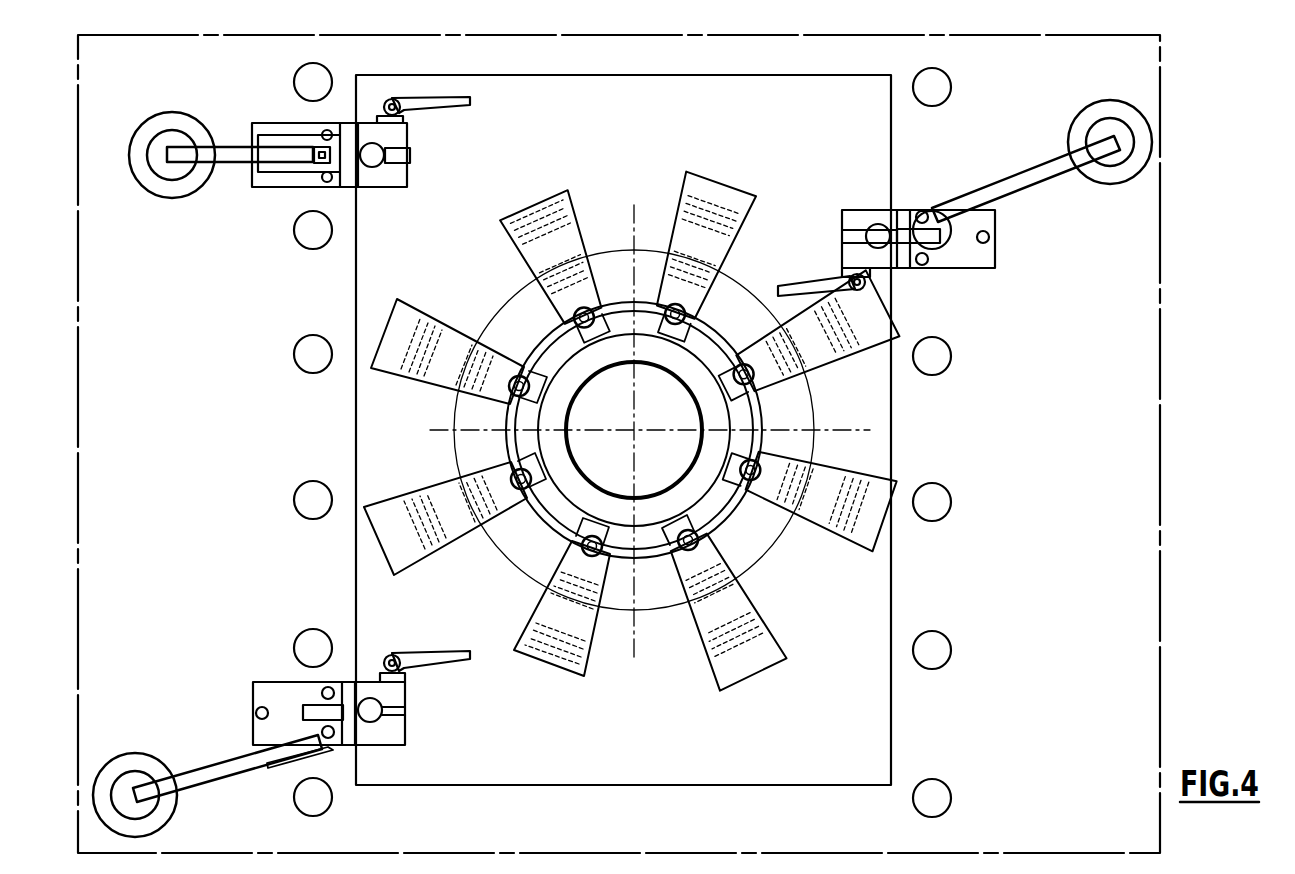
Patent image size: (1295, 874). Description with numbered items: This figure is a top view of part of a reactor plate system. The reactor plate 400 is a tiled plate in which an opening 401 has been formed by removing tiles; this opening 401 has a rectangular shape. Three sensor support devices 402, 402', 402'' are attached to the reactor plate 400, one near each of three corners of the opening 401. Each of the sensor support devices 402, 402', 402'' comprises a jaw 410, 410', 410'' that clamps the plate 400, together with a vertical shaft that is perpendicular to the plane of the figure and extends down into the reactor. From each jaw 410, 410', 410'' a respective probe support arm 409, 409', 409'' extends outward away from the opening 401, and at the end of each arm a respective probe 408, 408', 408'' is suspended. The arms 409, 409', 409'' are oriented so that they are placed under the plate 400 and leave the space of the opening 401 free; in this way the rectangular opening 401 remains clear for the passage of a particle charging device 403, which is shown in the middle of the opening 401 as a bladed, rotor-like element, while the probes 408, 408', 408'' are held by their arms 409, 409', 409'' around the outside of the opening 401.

The reactor plate 400 is at (1071, 418).
The opening 401 is at (873, 748).
The sensor support device 402 is at (575, 440).
The sensor support device 402' is at (907, 189).
The sensor support device 402'' is at (394, 717).
The particle charging device 403 is at (647, 188).
The probe 408 is at (172, 121).
The probe support arm 409 is at (240, 103).
The jaw 410 is at (362, 158).
The probe 408' is at (1104, 114).
The probe support arm 409' is at (1026, 190).
The jaw 410' is at (901, 269).
The probe 408'' is at (181, 795).
The probe support arm 409'' is at (233, 751).
The jaw 410'' is at (338, 673).